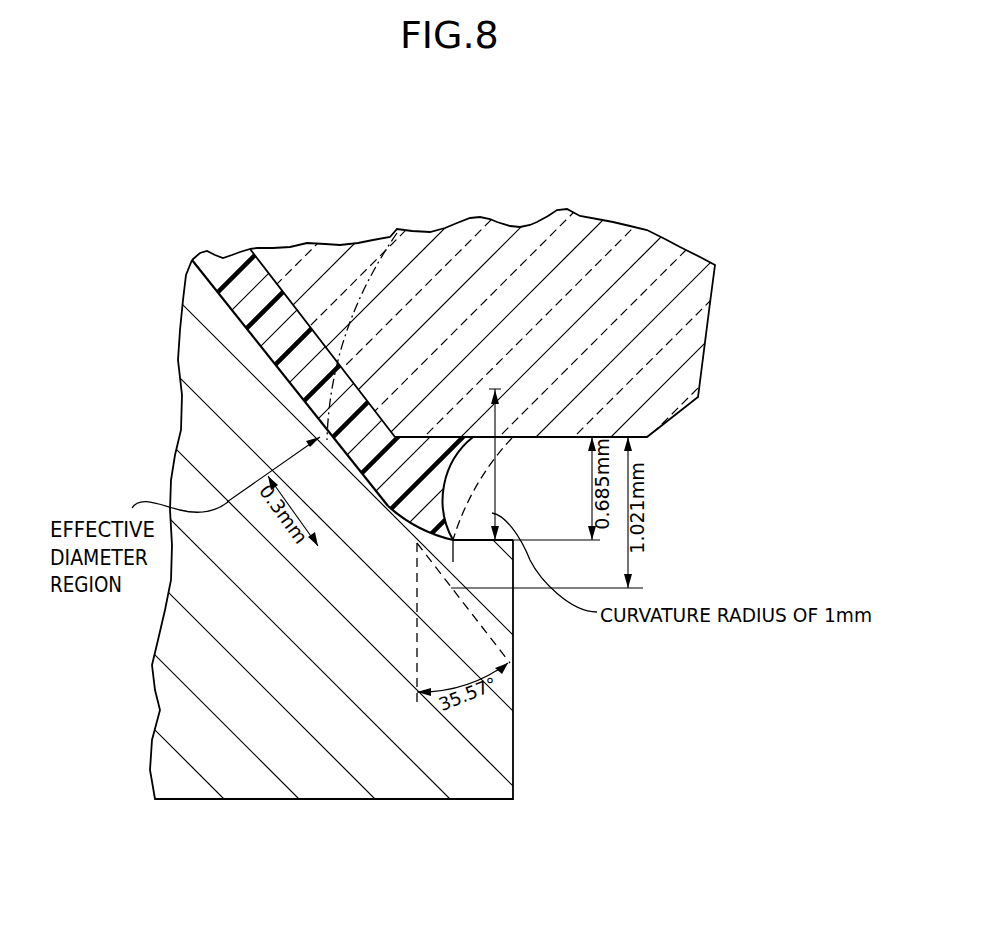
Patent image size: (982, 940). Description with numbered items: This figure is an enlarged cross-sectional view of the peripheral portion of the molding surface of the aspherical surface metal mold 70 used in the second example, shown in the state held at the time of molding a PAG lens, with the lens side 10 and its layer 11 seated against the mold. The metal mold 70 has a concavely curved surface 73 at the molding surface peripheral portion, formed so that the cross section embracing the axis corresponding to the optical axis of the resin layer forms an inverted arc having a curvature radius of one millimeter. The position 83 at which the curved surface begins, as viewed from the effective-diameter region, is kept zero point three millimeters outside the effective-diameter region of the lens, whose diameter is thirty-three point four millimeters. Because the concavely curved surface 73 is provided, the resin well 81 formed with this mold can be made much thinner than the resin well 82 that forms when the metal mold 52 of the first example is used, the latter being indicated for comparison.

The needle valve 10 is at (517, 225).
The coating layer 11 is at (237, 257).
The aspherical surface metal mold 70 is at (405, 799).
The metal mold of Example 1 52 is at (495, 642).
The concavely curved surface 73 is at (472, 540).
The resin well 81 is at (480, 445).
The resin well 82 is at (453, 557).
The position at which the curved surface begins 83 is at (388, 507).